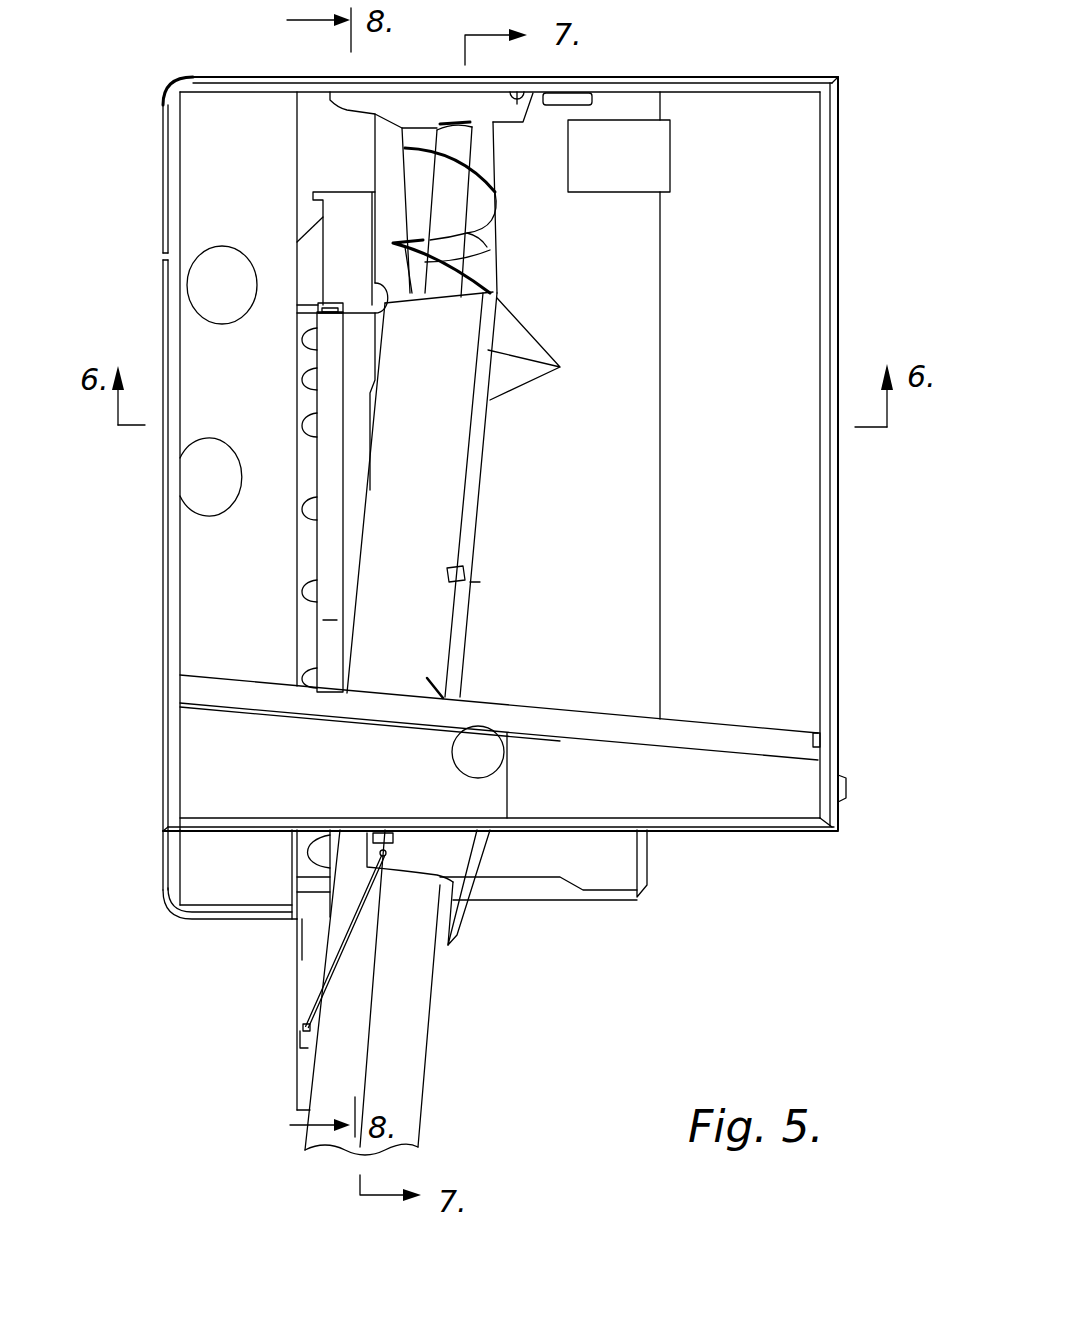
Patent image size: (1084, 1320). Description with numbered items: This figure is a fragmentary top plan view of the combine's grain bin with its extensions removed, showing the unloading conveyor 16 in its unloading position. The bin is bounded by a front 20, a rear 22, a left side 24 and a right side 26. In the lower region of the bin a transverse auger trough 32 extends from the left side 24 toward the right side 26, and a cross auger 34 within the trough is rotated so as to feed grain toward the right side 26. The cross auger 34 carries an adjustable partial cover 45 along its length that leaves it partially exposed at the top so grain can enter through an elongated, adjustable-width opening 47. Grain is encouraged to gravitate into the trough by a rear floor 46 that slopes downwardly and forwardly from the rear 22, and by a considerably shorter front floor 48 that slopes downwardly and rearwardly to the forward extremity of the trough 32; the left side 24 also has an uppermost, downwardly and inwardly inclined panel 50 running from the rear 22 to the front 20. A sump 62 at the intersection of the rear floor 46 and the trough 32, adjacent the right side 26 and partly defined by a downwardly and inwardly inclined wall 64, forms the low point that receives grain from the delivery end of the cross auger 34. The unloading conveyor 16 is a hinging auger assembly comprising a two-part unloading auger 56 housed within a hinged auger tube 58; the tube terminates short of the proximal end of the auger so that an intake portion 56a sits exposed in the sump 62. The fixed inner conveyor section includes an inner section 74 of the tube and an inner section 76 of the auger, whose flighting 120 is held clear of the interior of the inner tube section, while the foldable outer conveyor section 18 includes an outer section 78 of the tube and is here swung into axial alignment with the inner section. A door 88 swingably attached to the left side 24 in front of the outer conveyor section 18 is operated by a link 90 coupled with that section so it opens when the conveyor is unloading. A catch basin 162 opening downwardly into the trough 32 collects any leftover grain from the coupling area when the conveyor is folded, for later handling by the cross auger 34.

The unloading conveyor 16 is at (447, 1070).
The outer conveyor section 18 is at (432, 1103).
The front 20 is at (150, 556).
The rear 22 is at (856, 516).
The left side 24 is at (738, 850).
The right side 26 is at (648, 62).
The auger trough 32 is at (298, 386).
The cross auger 34 is at (301, 516).
The partial cover 45 is at (337, 472).
The rear floor 46 is at (782, 266).
The opening 47 is at (307, 567).
The front floor 48 is at (205, 628).
The inclined panel 50 is at (640, 806).
The unloading auger 56 is at (505, 274).
The intake portion 56a is at (492, 160).
The auger tube 58 is at (446, 975).
The sump 62 is at (490, 238).
The inclined wall 64 is at (392, 103).
The inner section of auger tube 74 is at (440, 610).
The inner section of auger 76 is at (440, 190).
The outer section of auger tube 78 is at (418, 1033).
The door 88 is at (303, 1015).
The link 90 is at (332, 980).
The flighting 120 is at (483, 201).
The catch basin 162 is at (300, 866).